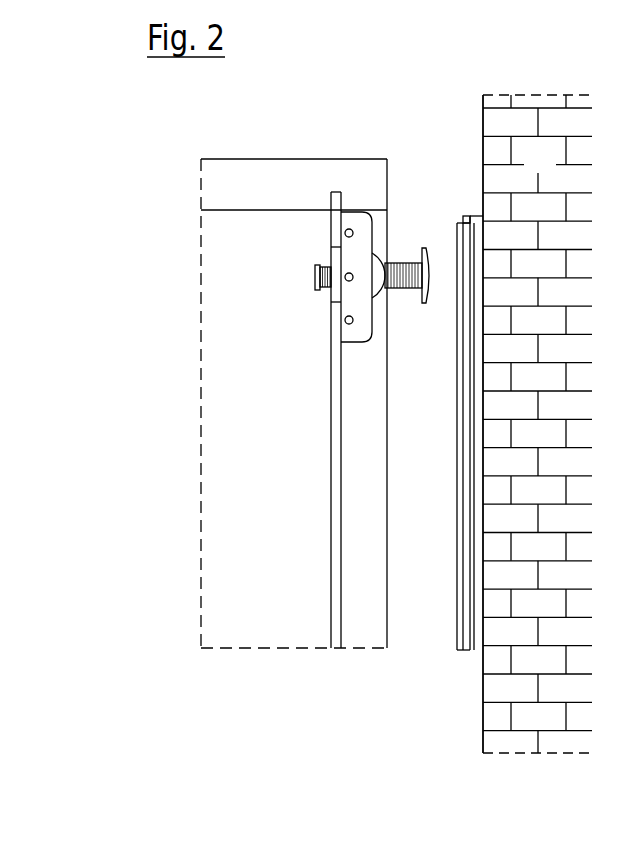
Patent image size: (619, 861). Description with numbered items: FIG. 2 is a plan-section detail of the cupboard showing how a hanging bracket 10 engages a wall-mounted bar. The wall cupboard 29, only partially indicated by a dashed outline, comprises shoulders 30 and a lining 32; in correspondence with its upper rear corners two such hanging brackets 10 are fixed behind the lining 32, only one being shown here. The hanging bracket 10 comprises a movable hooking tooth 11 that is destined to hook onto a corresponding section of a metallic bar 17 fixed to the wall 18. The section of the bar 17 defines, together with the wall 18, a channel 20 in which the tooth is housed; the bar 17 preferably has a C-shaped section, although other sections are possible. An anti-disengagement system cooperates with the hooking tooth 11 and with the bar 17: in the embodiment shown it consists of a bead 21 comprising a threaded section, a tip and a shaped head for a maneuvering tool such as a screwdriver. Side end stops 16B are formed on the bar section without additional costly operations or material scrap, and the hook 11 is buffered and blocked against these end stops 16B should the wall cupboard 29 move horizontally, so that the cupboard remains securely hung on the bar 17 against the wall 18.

The hanging bracket 10 is at (403, 337).
The hooking tooth 11 is at (428, 248).
The side end stops 16B is at (465, 215).
The metallic bar 17 is at (456, 621).
The wall 18 is at (553, 170).
The channel 20 is at (473, 639).
The bead 21 is at (312, 279).
The wall cupboard 29 is at (200, 360).
The shoulders 30 is at (286, 195).
The lining 32 is at (332, 622).